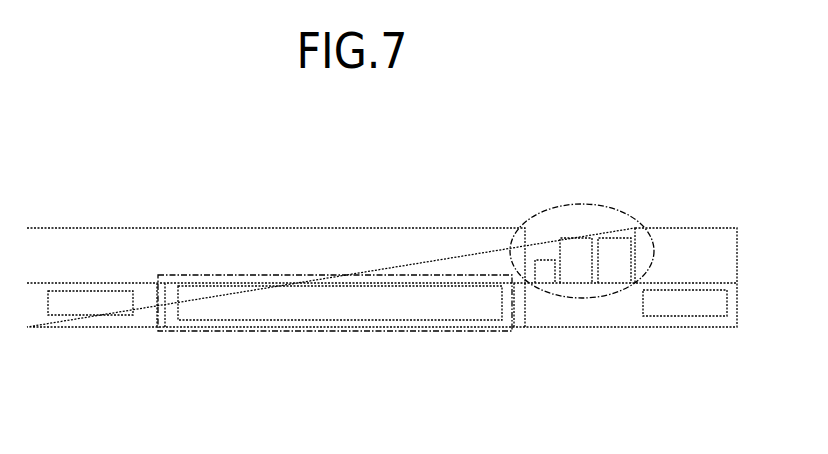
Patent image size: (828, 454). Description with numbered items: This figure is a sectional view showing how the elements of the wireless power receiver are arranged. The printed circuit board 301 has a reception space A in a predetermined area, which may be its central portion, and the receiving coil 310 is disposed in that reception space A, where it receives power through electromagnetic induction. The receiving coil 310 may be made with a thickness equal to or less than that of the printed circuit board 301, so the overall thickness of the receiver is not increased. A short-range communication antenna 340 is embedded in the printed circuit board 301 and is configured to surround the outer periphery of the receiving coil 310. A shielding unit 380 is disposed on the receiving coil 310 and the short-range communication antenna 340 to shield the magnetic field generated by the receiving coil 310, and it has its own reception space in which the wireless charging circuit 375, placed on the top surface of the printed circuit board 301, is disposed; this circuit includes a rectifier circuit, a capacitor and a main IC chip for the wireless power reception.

The printed circuit board 301 is at (143, 323).
The receiving coil 310 is at (353, 331).
The reception space A is at (421, 333).
The short-range communication antenna 340 is at (88, 316).
The shielding unit 380 is at (658, 227).
The wireless charging circuit 375 is at (659, 249).